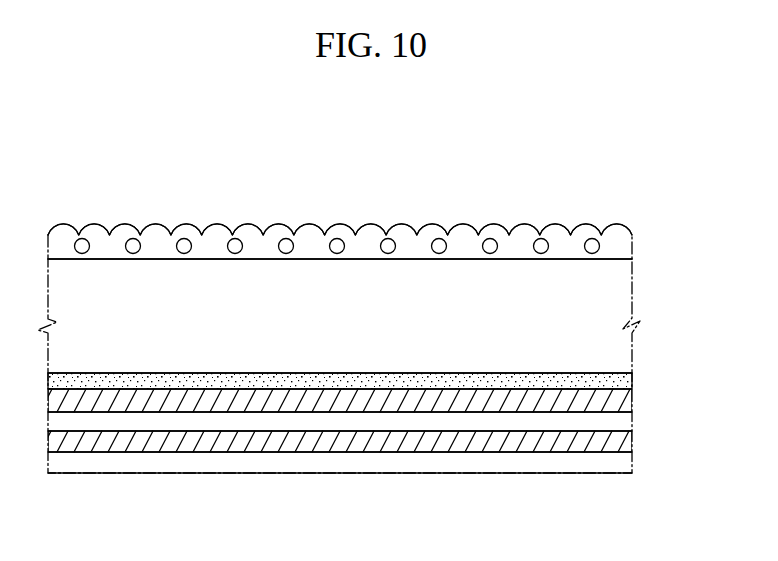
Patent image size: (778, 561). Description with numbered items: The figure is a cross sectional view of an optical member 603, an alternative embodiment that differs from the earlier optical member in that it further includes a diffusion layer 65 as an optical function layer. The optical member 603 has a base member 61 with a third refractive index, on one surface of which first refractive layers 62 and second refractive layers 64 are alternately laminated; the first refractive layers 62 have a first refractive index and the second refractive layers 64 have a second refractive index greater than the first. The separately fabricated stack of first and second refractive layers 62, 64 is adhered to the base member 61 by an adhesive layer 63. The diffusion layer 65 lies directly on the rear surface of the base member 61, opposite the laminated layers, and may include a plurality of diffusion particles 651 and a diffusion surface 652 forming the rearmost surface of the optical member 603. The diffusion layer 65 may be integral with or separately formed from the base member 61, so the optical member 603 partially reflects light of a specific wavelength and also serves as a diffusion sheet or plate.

The optical member 603 is at (533, 178).
The diffusion layer 65 is at (553, 234).
The diffusion surface 652 is at (617, 231).
The diffusion particles 651 is at (600, 246).
The base member 61 is at (615, 298).
The adhesive layer 63 is at (622, 377).
The first refractive layers 62 is at (622, 401).
The second refractive layers 64 is at (615, 421).